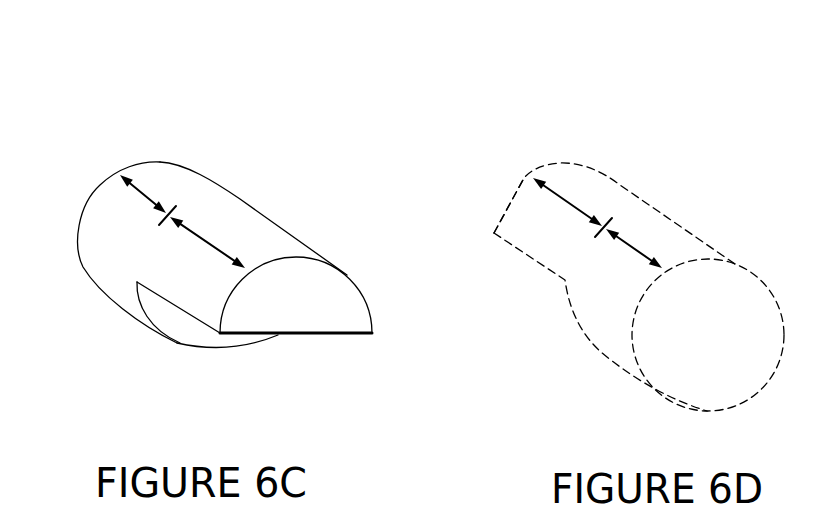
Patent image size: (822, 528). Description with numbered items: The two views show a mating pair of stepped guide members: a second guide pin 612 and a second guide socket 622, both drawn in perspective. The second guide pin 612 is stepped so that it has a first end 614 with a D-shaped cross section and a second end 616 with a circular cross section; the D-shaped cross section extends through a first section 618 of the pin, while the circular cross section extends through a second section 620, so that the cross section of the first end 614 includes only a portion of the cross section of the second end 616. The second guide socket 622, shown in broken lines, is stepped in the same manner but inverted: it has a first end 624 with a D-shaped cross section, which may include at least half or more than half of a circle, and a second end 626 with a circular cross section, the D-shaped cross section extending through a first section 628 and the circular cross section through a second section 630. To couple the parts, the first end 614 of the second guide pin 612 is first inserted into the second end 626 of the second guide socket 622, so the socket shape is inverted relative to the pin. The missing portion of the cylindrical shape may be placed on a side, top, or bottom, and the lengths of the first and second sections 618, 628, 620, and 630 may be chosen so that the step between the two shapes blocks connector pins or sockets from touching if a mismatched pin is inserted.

In FIG. 6C, the second guide pin 612 is at (89, 65).
In FIG. 6C, the first end 614 is at (348, 295).
In FIG. 6C, the second end 616 is at (101, 270).
In FIG. 6C, the first section 618 is at (212, 240).
In FIG. 6C, the second section 620 is at (140, 193).
In FIG. 6D, the second guide socket 622 is at (496, 55).
In FIG. 6D, the first end 624 is at (518, 210).
In FIG. 6D, the second end 626 is at (692, 393).
In FIG. 6D, the first section 628 is at (558, 195).
In FIG. 6D, the second section 630 is at (617, 240).